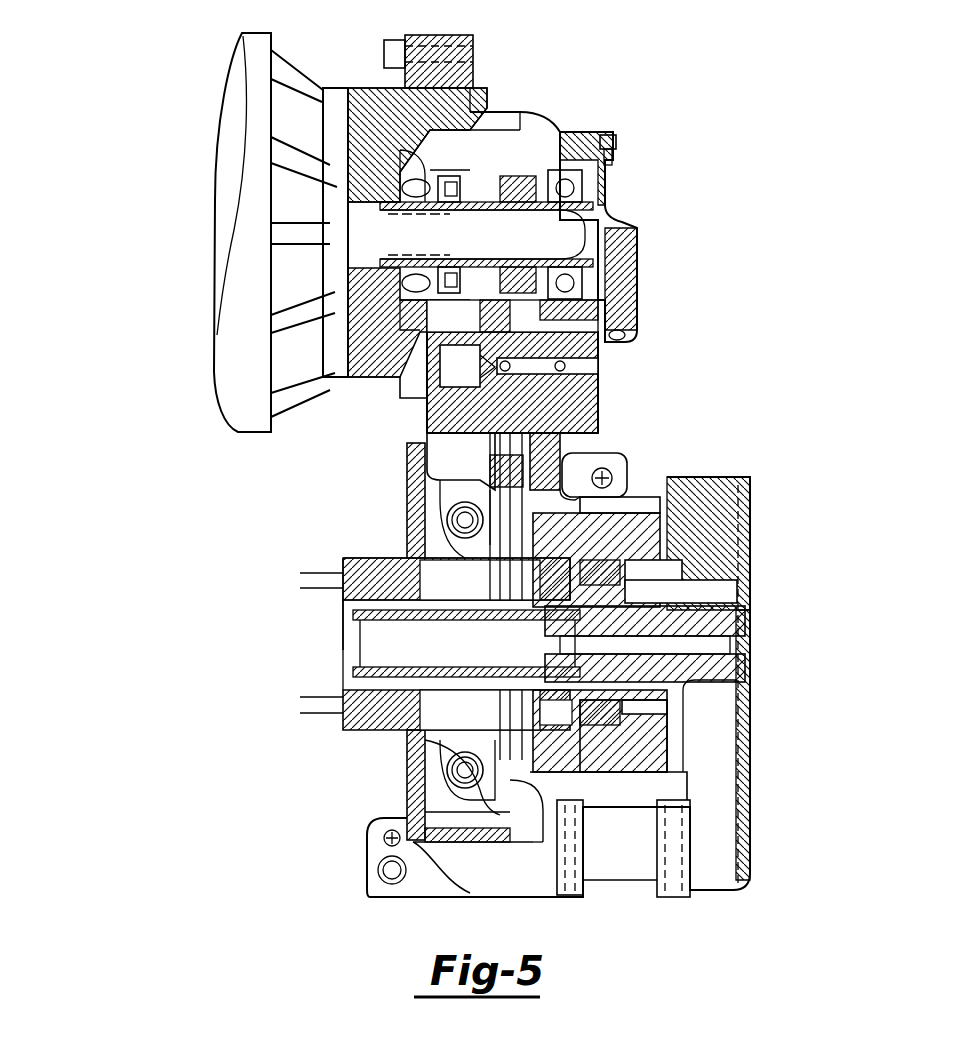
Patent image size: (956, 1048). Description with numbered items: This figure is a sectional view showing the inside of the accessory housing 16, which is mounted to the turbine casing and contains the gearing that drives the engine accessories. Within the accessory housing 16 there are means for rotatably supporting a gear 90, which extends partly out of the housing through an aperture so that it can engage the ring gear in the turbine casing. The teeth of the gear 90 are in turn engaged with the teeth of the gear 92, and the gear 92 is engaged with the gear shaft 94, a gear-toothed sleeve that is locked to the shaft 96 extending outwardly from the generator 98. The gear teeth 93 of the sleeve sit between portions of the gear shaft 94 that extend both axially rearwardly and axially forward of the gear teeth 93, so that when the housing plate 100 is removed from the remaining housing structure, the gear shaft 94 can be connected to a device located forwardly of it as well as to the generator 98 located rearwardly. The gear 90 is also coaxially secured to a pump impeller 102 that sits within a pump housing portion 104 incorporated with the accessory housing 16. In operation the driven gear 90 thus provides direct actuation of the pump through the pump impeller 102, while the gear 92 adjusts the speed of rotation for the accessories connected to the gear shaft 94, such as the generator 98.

The accessory housing 16 is at (766, 636).
The gear 90 is at (538, 770).
The gear 92 is at (520, 473).
The gear teeth 93 is at (513, 197).
The gear shaft 94 is at (580, 140).
The shaft 96 is at (430, 238).
The generator 98 is at (263, 63).
The housing plate 100 is at (617, 318).
The pump impeller 102 is at (673, 598).
The pump housing portion 104 is at (667, 723).